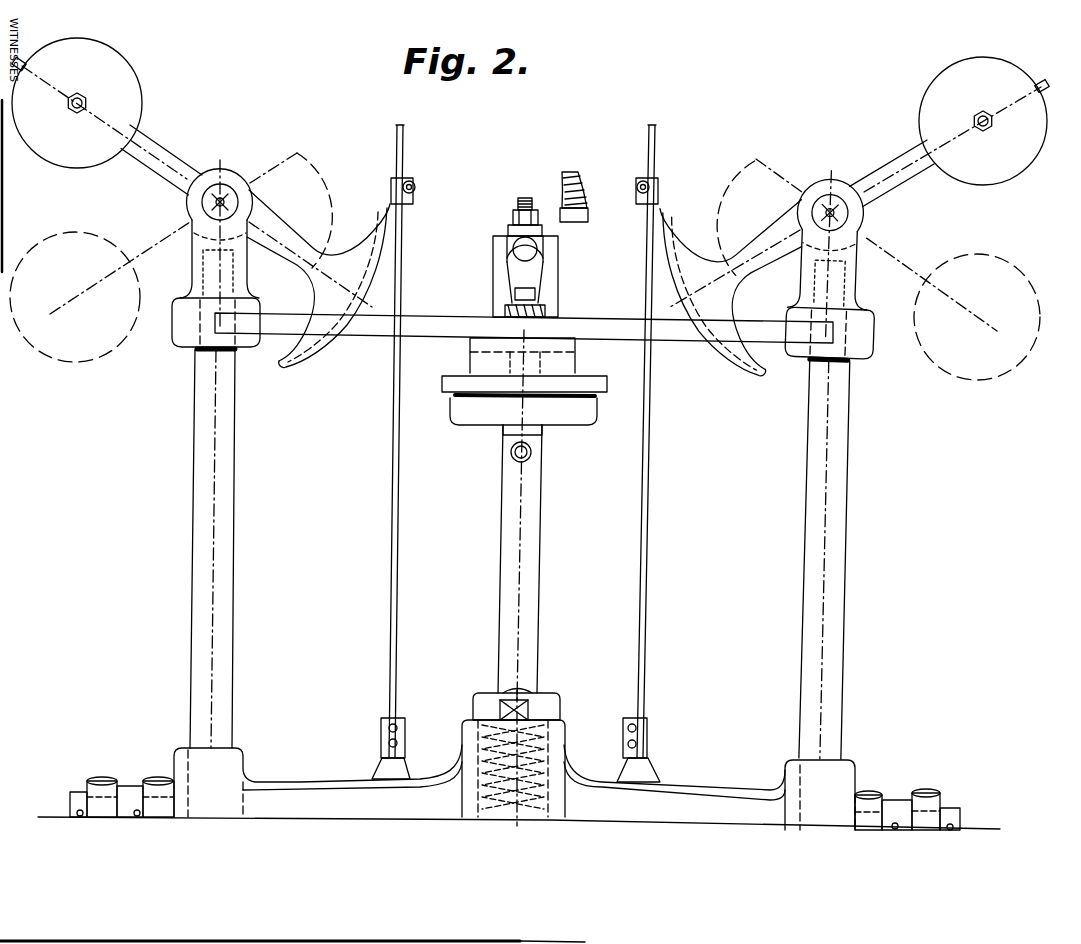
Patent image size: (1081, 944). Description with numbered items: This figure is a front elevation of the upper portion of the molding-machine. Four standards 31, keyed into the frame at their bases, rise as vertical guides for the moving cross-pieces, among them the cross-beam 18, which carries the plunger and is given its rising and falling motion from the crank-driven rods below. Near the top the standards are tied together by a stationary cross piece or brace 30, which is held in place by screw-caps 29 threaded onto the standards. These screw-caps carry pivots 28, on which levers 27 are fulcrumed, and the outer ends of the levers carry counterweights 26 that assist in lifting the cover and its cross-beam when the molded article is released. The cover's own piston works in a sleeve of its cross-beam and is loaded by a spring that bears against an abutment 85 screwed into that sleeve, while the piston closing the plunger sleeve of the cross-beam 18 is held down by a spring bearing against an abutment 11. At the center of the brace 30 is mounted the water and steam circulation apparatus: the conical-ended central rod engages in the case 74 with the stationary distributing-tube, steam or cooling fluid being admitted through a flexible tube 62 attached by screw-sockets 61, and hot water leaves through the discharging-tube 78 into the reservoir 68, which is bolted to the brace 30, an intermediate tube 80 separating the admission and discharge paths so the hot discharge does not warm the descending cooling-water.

The abutment 11 is at (568, 720).
The cross-beam 18 is at (519, 787).
The counterweights 26 is at (529, 209).
The levers 27 is at (207, 160).
The pivots 28 is at (270, 178).
The screw-caps 29 is at (203, 262).
The cross piece or brace 30 is at (278, 325).
The standards 31 is at (240, 395).
The screw-sockets 61 is at (534, 208).
The flexible tube 62 is at (589, 215).
The reservoir 68 is at (598, 415).
The case 74 is at (539, 271).
The discharging-tube 78 is at (527, 600).
The intermediate tube 80 is at (532, 358).
The abutment 85 is at (545, 692).